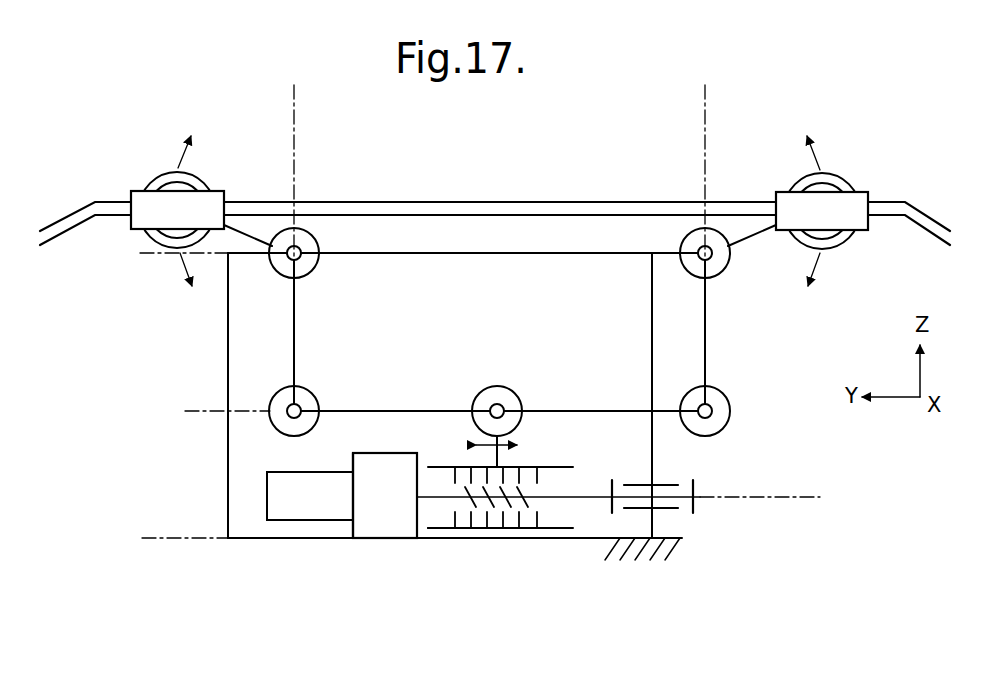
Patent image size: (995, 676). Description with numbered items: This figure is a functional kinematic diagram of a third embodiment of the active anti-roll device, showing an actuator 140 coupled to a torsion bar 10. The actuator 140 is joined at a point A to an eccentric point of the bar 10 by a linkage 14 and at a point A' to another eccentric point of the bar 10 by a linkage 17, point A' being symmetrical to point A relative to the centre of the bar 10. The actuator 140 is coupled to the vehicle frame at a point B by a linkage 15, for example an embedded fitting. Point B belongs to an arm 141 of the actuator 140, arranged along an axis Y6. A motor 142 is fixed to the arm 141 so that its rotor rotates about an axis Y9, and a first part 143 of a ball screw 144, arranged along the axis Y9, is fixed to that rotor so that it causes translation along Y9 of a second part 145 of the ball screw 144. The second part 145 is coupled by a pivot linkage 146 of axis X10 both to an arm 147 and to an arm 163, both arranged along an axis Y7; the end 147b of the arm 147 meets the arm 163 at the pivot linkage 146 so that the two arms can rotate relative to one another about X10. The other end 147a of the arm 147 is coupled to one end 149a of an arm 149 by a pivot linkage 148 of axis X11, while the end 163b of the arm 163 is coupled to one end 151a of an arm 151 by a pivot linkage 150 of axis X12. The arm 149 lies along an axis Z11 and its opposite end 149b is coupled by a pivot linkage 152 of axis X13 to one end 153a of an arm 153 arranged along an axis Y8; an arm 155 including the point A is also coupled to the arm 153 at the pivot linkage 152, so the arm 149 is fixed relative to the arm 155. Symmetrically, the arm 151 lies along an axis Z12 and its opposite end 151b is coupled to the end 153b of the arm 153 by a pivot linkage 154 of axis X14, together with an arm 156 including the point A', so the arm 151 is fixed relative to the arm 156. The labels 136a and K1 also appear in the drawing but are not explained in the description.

The torsion bar 10 is at (472, 200).
The linkage 14 is at (148, 192).
The linkage 15 is at (675, 548).
The linkage 17 is at (848, 182).
The shaft portion 136a is at (527, 410).
The actuator 140 is at (158, 428).
The arm 141 is at (483, 540).
The motor 142 is at (295, 523).
The first part of ball screw 143 is at (557, 500).
The ball screw 144 is at (520, 512).
The second part of ball screw 145 is at (435, 530).
The pivot linkage 146 is at (480, 393).
The arm 147 is at (433, 410).
The end of arm 147a is at (318, 404).
The end of arm 147b is at (462, 414).
The pivot linkage 148 is at (277, 398).
The arm 149 is at (296, 315).
The end of arm 149a is at (296, 377).
The opposite end of arm 149b is at (296, 287).
The pivot linkage 150 is at (730, 408).
The arm 151 is at (707, 331).
The end of arm 151a is at (707, 375).
The opposite end of arm 151b is at (707, 287).
The pivot linkage 152 is at (310, 243).
The arm 153 is at (525, 256).
The end of arm 153a is at (310, 240).
The end of arm 153b is at (668, 252).
The pivot linkage 154 is at (681, 270).
The arm 155 is at (251, 231).
The arm 156 is at (744, 229).
The arm 163 is at (580, 410).
The end of arm 163b is at (672, 410).
The point A is at (234, 182).
The point A' is at (769, 188).
The point B is at (652, 520).
The motor housing edge K1 is at (350, 540).
The axis X10 is at (500, 404).
The axis X11 is at (291, 417).
The axis X12 is at (710, 416).
The axis X13 is at (290, 260).
The axis X14 is at (712, 253).
The axis Y6 is at (165, 545).
The axis Y7 is at (200, 410).
The axis Y8 is at (160, 262).
The axis Y9 is at (780, 497).
The axis Z11 is at (297, 116).
The axis Z12 is at (700, 150).